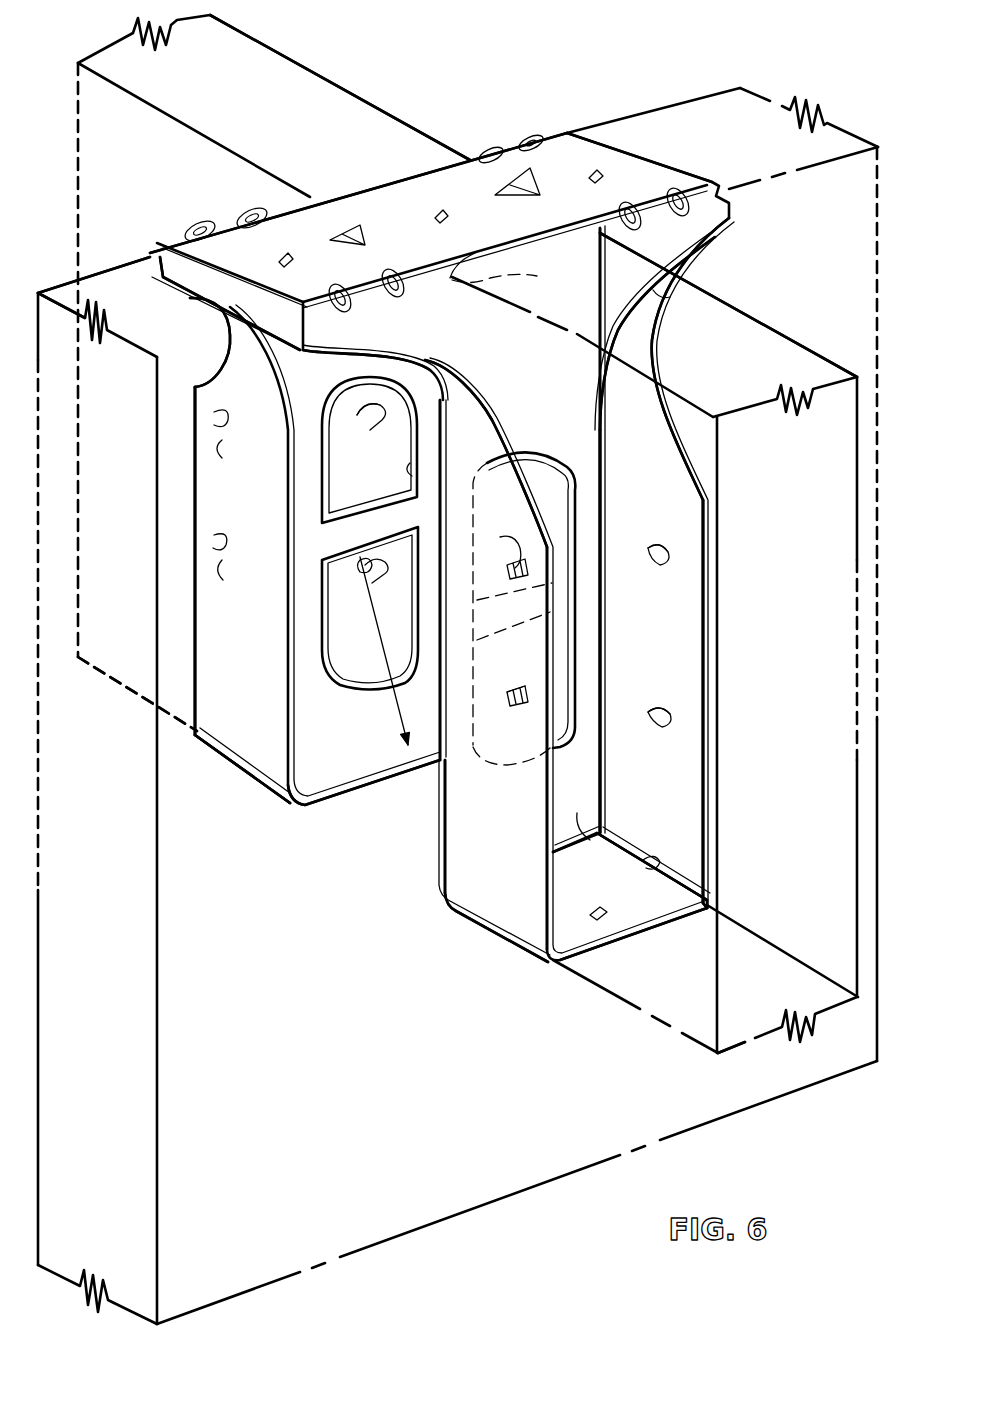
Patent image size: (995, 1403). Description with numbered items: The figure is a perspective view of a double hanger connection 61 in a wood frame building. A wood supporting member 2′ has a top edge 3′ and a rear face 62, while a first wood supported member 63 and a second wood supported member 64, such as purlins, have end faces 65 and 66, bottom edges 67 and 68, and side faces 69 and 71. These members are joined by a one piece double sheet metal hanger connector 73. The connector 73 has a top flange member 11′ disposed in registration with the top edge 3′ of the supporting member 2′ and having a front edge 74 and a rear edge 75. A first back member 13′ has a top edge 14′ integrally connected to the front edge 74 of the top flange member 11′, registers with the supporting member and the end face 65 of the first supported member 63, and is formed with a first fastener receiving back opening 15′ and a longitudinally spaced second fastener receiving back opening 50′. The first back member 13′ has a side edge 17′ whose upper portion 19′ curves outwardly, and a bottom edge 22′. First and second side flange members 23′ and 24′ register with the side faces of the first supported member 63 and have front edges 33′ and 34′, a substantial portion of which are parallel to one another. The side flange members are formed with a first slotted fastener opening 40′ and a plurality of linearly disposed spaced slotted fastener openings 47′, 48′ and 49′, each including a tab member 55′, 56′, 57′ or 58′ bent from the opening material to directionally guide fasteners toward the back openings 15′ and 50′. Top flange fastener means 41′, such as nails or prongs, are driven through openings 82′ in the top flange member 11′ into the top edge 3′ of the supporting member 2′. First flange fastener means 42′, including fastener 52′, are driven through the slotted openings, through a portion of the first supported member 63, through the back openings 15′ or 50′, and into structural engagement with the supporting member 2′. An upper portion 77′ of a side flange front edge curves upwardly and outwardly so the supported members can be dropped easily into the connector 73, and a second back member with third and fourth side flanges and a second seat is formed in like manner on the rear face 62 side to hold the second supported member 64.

The wood supporting member 2′ is at (55, 280).
The top edge 3′ is at (138, 332).
The top flange member 11′ is at (438, 199).
The first back member 13′ is at (380, 727).
The top edge 14′ is at (213, 222).
The first fastener receiving back opening 15′ is at (413, 465).
The side edge 17′ is at (290, 678).
The upper portion 19′ is at (268, 345).
The bottom edge 22′ is at (377, 778).
The first side flange member 23′ is at (359, 494).
The second side flange member 24′ is at (255, 598).
The front edge 33′ is at (320, 423).
The front edge 34′ is at (195, 467).
The first slotted fastener opening 40′ is at (360, 573).
The top flange fastener means 41′ is at (347, 227).
The first flange fastener means 42′ is at (398, 730).
The first slotted fastener opening 47′ is at (380, 422).
The first slotted fastener opening 48′ is at (216, 535).
The first slotted fastener opening 49′ is at (222, 410).
The second fastener receiving back opening 50′ is at (327, 683).
The fastener 52′ is at (420, 642).
The tab member 55′ is at (383, 575).
The tab member 56′ is at (362, 430).
The tab member 57′ is at (218, 557).
The tab member 58′ is at (216, 442).
The double hanger connection 61 is at (527, 103).
The rear face 62 is at (826, 199).
The first wood supported member 63 is at (303, 62).
The second wood supported member 64 is at (768, 322).
The end face 65 is at (430, 160).
The end face 66 is at (505, 273).
The bottom edge 67 is at (118, 694).
The bottom edge 68 is at (685, 1030).
The side face 69 is at (117, 142).
The side face 71 is at (684, 447).
The one piece double sheet metal hanger connector 73 is at (568, 133).
The front edge 74 is at (275, 207).
The rear edge 75 is at (430, 283).
The upper portion 77′ is at (230, 322).
The openings 82′ is at (325, 222).